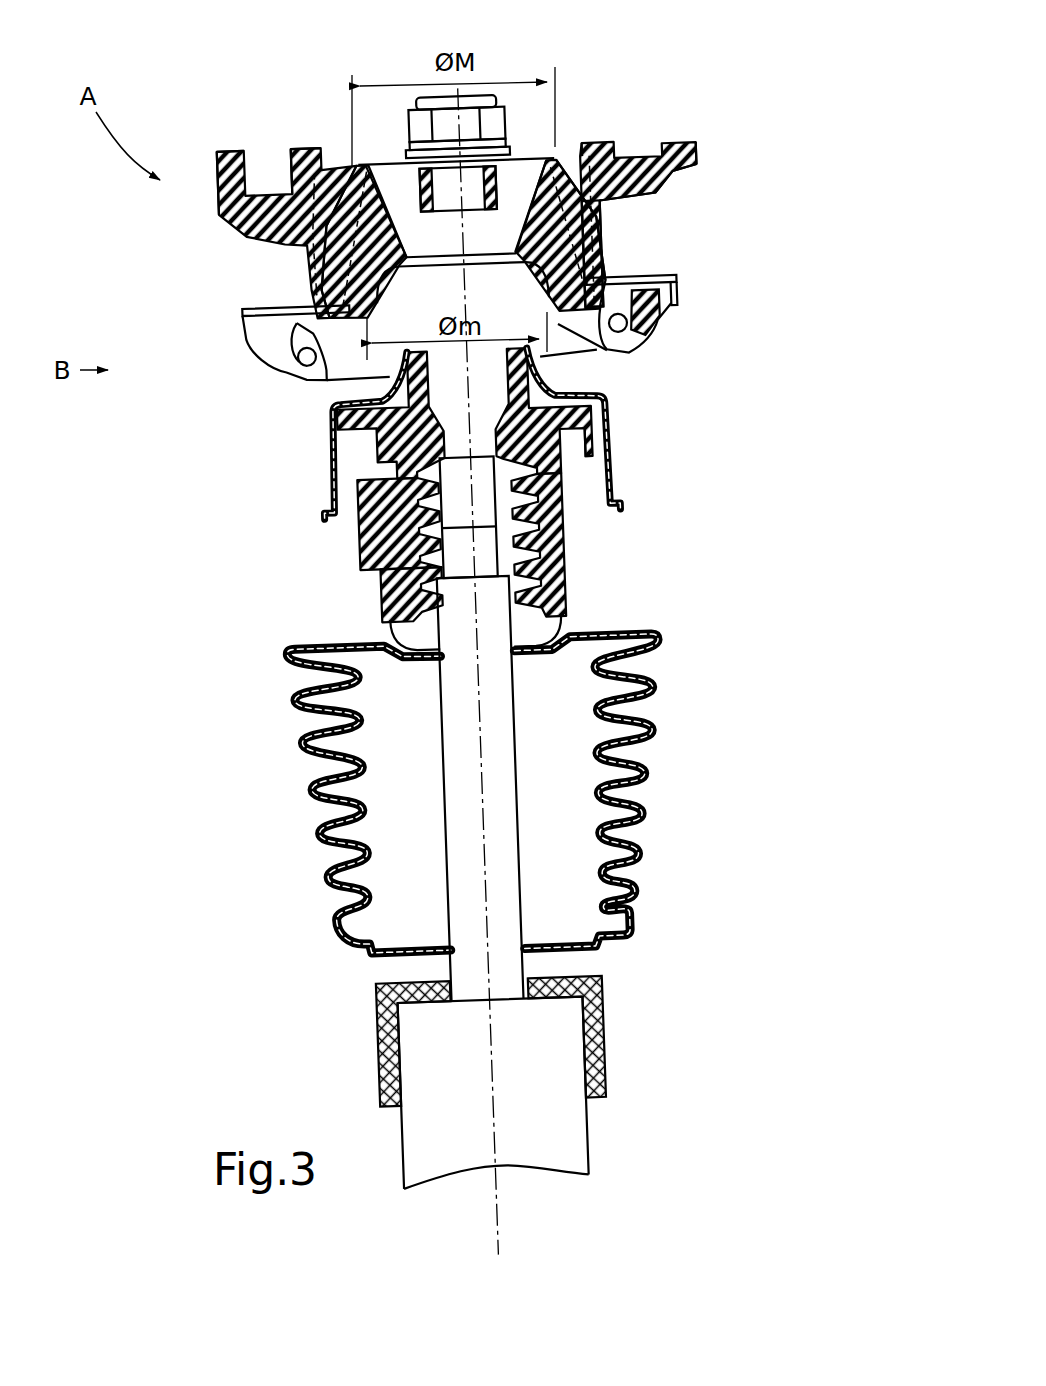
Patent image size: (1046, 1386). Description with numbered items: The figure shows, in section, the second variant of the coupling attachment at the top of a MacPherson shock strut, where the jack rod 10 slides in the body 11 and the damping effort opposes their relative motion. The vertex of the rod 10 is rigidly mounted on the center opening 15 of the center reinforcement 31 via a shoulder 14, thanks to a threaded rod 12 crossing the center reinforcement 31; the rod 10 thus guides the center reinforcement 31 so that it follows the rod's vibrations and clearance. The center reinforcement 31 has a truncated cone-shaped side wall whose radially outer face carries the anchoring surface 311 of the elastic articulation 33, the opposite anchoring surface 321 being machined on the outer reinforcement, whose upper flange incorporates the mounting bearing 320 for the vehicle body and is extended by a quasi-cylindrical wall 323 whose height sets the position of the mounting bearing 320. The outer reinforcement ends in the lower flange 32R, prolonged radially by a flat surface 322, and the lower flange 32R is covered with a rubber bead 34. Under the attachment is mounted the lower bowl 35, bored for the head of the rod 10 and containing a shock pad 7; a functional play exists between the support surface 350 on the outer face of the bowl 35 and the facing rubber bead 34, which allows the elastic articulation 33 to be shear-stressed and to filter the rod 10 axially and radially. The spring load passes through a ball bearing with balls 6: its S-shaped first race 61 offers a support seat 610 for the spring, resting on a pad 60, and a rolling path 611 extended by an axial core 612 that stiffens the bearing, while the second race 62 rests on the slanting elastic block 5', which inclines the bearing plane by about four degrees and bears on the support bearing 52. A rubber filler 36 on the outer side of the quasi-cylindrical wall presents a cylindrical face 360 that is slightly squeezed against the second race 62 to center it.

The slanting elastic block 5' is at (457, 227).
The balls 6 is at (305, 372).
The shock pad 7 is at (390, 565).
The jack rod 10 is at (502, 793).
The body 11 is at (580, 1137).
The threaded rod 12 is at (493, 547).
The shoulder 14 is at (567, 560).
The center opening 15 is at (445, 256).
The center reinforcement 31 is at (568, 238).
The anchoring surface 311 is at (547, 163).
The lower flange 32R is at (335, 270).
The mounting bearing 320 is at (307, 144).
The anchoring surface 321 is at (343, 168).
The flat surface 322 is at (345, 440).
The quasi-cylindrical wall 323 is at (565, 165).
The elastic articulation 33 is at (355, 185).
The rubber bead 34 is at (598, 354).
The lower bowl 35 is at (610, 467).
The support surface 350 is at (592, 383).
The filler 36 is at (610, 228).
The cylindrical face 360 is at (605, 252).
The support bearing 52 is at (660, 203).
The pad 60 is at (665, 309).
The first race 61 is at (252, 335).
The support seat 610 is at (290, 368).
The rolling path 611 is at (300, 358).
The core 612 is at (655, 316).
The second race 62 is at (270, 315).